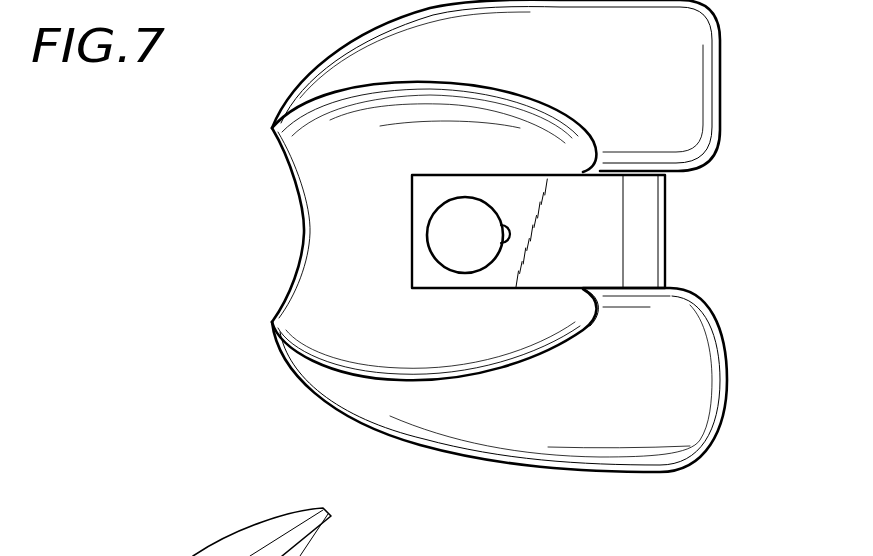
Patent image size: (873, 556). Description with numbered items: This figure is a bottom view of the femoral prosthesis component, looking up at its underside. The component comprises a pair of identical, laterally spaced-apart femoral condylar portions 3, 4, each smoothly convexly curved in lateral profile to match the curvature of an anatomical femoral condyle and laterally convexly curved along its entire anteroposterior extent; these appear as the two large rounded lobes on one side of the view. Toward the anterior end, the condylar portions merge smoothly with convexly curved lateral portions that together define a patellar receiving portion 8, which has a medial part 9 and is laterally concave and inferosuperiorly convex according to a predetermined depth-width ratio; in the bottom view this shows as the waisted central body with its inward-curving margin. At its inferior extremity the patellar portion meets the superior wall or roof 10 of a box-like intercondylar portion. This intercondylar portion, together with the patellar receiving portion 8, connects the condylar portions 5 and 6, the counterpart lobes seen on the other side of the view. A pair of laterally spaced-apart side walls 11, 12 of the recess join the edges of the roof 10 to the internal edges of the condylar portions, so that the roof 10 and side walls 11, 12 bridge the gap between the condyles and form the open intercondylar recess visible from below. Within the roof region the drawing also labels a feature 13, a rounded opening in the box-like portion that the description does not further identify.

The femoral condylar portion 3 is at (722, 350).
The femoral condylar portion 4 is at (717, 108).
The condylar portion 5 is at (527, 417).
The condylar portion 6 is at (437, 38).
The patellar receiving portion 8 is at (337, 317).
The medial part 9 is at (300, 228).
The roof 10 is at (607, 222).
The side wall 11 is at (593, 188).
The side wall 12 is at (590, 275).
The opening 13 is at (447, 210).